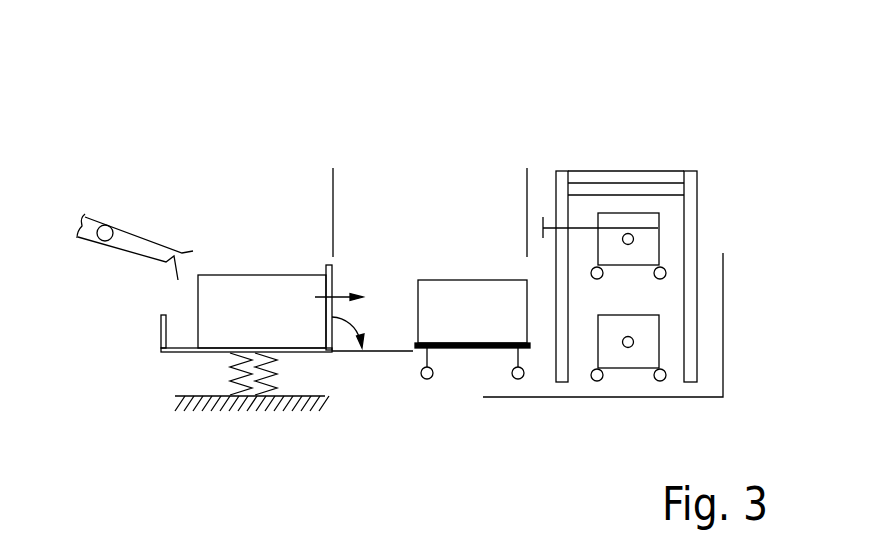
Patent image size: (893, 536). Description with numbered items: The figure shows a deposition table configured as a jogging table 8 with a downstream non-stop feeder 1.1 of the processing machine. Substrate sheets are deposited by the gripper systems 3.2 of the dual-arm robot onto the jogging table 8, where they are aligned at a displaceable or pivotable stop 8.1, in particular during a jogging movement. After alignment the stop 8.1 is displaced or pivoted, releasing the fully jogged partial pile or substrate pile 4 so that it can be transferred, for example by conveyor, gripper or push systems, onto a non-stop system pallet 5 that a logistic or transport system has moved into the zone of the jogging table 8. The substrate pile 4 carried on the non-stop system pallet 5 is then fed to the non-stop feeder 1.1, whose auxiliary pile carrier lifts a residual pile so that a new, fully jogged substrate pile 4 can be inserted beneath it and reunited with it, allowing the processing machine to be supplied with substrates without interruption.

The non-stop feeder 1.1 is at (603, 200).
The gripper system 3.2 is at (173, 181).
The substrate pile 4 is at (447, 293).
The non-stop system pallet 5 is at (482, 346).
The jogging table 8 is at (170, 353).
The stop 8.1 is at (333, 351).